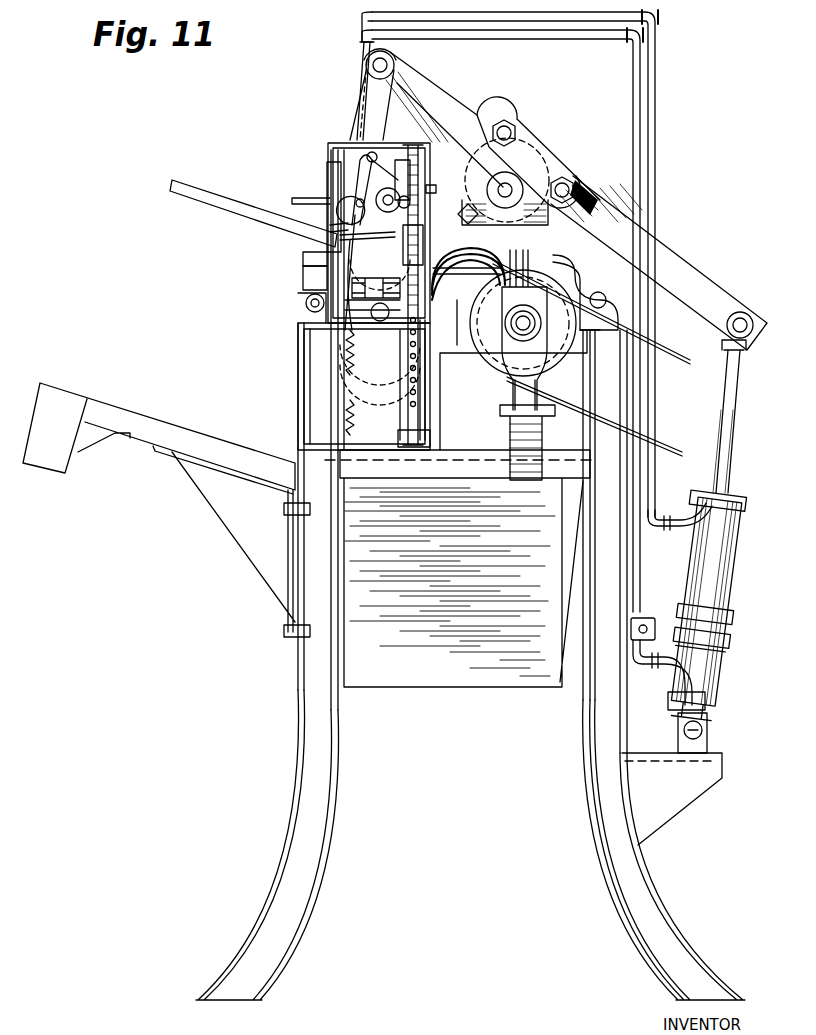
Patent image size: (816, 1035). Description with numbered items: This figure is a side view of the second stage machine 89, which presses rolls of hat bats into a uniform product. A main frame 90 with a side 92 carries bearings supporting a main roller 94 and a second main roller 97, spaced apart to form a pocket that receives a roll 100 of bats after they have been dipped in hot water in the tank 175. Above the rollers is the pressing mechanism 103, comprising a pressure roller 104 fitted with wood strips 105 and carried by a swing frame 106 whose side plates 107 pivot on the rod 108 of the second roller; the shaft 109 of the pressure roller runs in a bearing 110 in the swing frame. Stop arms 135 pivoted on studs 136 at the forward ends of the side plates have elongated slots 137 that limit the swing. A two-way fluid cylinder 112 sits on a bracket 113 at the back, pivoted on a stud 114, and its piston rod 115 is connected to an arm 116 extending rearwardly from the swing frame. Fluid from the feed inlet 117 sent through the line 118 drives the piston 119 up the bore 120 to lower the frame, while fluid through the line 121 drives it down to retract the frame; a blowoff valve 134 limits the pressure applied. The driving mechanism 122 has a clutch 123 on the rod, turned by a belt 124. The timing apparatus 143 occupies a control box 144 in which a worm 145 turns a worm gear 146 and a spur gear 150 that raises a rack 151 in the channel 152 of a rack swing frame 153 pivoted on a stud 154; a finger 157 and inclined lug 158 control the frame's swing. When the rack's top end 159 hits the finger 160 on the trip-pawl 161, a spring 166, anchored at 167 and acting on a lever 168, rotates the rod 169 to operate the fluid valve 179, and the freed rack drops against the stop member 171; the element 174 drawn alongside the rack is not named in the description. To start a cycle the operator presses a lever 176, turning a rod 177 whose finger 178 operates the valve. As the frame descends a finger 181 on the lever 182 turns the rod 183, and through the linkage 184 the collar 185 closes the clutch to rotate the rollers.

The second stage machine 89 is at (298, 352).
The main frame 90 is at (298, 772).
The side 92 is at (318, 710).
The main roller 94 is at (348, 377).
The second main roller 97 is at (578, 348).
The roll of hat bats 100 is at (466, 323).
The pressing mechanism 103 is at (708, 242).
The pressure roller 104 is at (494, 192).
The wood strips 105 is at (478, 172).
The swing frame 106 is at (482, 115).
The side plates 107 is at (432, 103).
The rod 108 is at (524, 330).
The shaft 109 is at (494, 137).
The bearing 110 is at (464, 214).
The fluid cylinder 112 is at (723, 583).
The bracket 113 is at (708, 747).
The stud 114 is at (705, 729).
The piston rod 115 is at (733, 428).
The arm 116 is at (706, 292).
The feed inlet 117 is at (300, 197).
The line 118 is at (642, 557).
The piston 119 is at (722, 650).
The bore 120 is at (728, 625).
The line 121 is at (656, 160).
The driving mechanism 122 is at (503, 364).
The clutch 123 is at (545, 378).
The belt 124 is at (680, 368).
The blowoff valve 134 is at (648, 617).
The stop arms 135 is at (362, 103).
The studs 136 is at (393, 58).
The elongated slots 137 is at (358, 118).
The timing apparatus 143 is at (328, 148).
The control box 144 is at (432, 440).
The worm 145 is at (380, 321).
The worm gear 146 is at (384, 262).
The spur gear 150 is at (428, 318).
The rack 151 is at (420, 236).
The channel 152 is at (426, 388).
The rack swing frame 153 is at (428, 414).
The stud 154 is at (395, 445).
The finger 157 is at (410, 204).
The inclined lug 158 is at (443, 189).
The top end 159 is at (410, 178).
The finger 160 is at (399, 152).
The trip-pawl 161 is at (385, 141).
The spring 166 is at (345, 422).
The spring connection 167 is at (345, 436).
The lever 168 is at (343, 192).
The rod 169 is at (394, 203).
The stop member 171 is at (400, 412).
The pins 174 is at (413, 392).
The tank 175 is at (437, 688).
The lever 176 is at (180, 193).
The rod 177 is at (338, 222).
The finger 178 is at (373, 272).
The fluid valve 179 is at (328, 170).
The finger 181 is at (303, 257).
The lever 182 is at (303, 279).
The rod 183 is at (470, 262).
The linkage 184 is at (585, 291).
The collar 185 is at (540, 360).